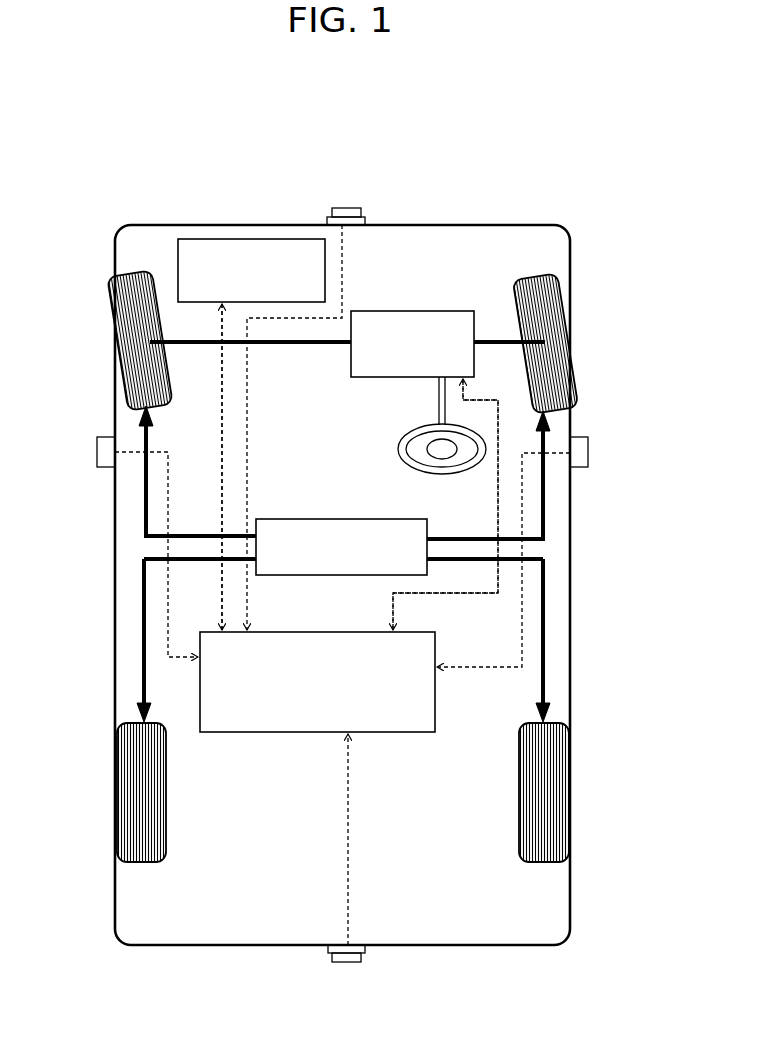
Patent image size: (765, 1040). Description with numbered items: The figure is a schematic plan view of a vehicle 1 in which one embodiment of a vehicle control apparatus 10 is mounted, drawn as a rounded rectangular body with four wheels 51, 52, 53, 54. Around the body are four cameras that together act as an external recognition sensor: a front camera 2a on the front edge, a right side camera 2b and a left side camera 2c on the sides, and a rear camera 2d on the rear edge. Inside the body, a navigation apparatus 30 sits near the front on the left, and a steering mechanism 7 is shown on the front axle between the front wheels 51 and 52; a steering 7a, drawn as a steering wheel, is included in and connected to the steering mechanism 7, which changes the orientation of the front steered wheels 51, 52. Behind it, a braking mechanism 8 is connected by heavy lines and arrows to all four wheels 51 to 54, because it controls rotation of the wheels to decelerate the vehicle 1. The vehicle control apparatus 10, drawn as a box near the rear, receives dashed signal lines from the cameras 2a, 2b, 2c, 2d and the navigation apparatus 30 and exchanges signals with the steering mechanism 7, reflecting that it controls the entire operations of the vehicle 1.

The vehicle 1 is at (470, 225).
The front camera 2a is at (348, 208).
The right side camera 2b is at (588, 448).
The left side camera 2c is at (97, 455).
The rear camera 2d is at (348, 962).
The steering mechanism 7 is at (410, 311).
The steering 7a is at (398, 446).
The braking mechanism 8 is at (338, 519).
The vehicle control apparatus 10 is at (290, 732).
The navigation apparatus 30 is at (251, 239).
The front wheel 51 is at (110, 320).
The front wheel 52 is at (563, 297).
The wheel 53 is at (122, 723).
The wheel 54 is at (566, 723).